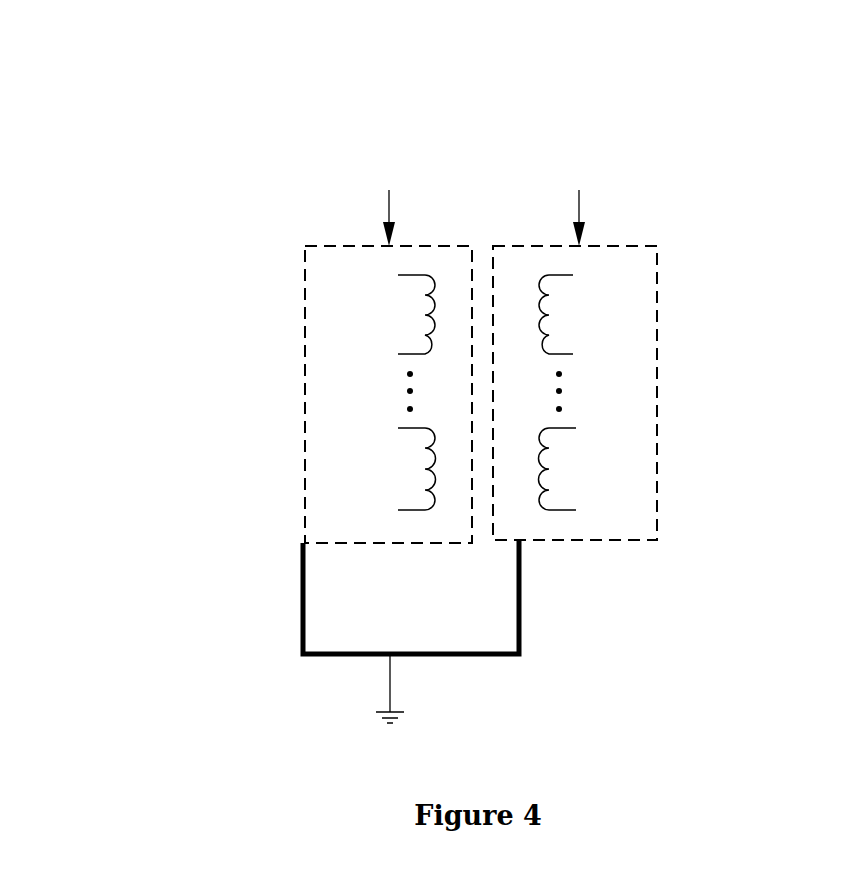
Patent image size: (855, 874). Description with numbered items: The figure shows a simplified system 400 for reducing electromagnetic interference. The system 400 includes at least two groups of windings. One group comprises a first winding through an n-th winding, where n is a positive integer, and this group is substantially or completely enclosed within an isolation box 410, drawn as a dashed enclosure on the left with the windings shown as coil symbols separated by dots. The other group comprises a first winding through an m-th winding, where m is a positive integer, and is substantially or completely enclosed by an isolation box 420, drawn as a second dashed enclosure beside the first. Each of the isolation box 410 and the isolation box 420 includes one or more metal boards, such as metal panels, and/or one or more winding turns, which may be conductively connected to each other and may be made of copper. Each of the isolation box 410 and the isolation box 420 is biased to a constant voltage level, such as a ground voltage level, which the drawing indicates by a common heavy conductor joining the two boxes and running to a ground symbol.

The system 400 is at (112, 82).
The isolation box 410 is at (303, 378).
The isolation box 420 is at (657, 378).